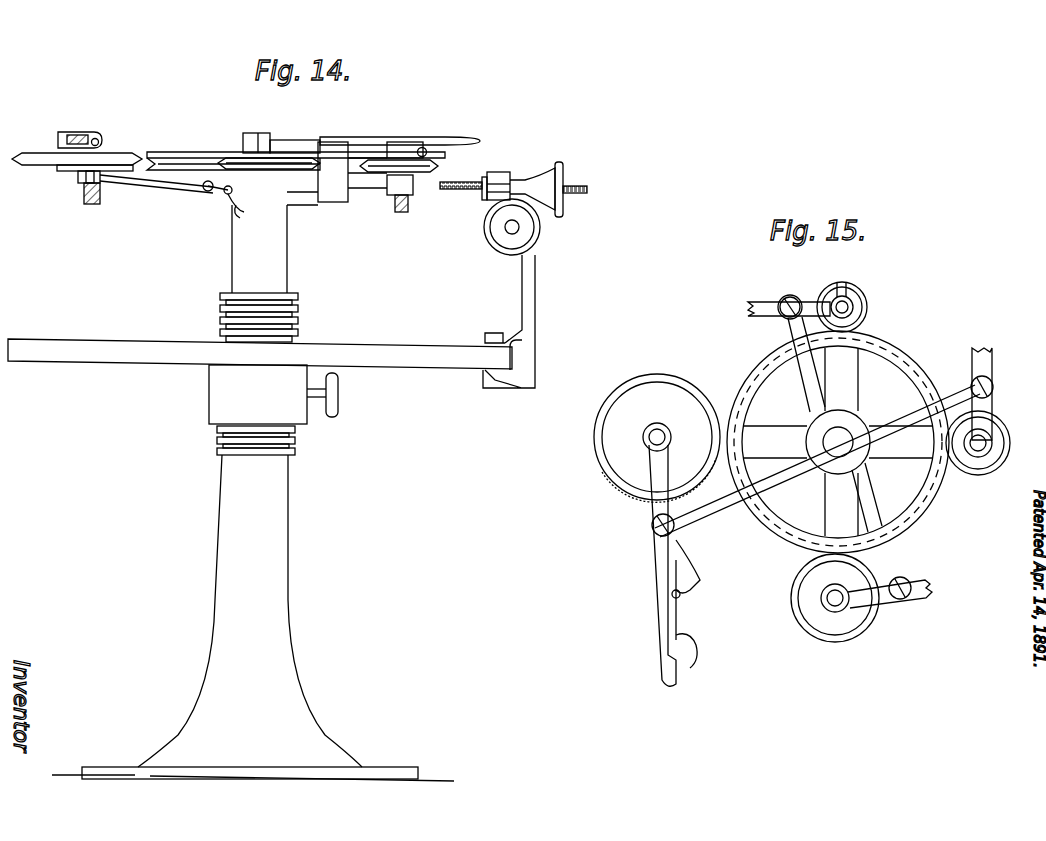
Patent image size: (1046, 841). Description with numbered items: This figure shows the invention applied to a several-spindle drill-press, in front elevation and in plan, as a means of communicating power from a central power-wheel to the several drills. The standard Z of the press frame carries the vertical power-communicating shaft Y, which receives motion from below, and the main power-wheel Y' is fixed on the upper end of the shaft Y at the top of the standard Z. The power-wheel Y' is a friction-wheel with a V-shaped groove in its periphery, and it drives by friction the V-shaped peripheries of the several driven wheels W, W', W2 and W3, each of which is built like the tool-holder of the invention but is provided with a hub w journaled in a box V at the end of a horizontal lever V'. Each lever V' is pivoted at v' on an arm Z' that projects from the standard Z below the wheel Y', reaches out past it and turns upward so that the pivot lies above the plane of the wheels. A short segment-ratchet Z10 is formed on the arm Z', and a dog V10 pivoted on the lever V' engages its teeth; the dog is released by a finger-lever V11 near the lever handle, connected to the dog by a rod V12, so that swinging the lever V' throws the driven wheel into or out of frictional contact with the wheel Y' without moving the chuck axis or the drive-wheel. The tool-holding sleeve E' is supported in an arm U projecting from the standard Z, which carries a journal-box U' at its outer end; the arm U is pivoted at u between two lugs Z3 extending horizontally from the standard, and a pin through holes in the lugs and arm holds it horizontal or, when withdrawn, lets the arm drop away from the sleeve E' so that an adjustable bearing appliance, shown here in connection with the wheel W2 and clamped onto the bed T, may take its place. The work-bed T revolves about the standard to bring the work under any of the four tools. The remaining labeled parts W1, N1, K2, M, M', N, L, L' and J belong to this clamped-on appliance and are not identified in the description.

In FIG. 14, the work-bed T is at (408, 352).
In FIG. 14, the standard Z is at (253, 618).
In FIG. 14, the driven wheel W is at (77, 143).
In FIG. 15, the driven wheel W is at (657, 438).
In FIG. 14, the box V is at (250, 129).
In FIG. 15, the box V is at (779, 450).
In FIG. 14, the horizontal lever V' is at (233, 120).
In FIG. 15, the horizontal lever V' is at (828, 436).
In FIG. 14, the journal-box U' is at (72, 183).
In FIG. 14, the tool-holding sleeve E' is at (247, 206).
In FIG. 14, the main power-wheel Y' is at (313, 145).
In FIG. 15, the main power-wheel Y' is at (917, 338).
In FIG. 14, the arm U is at (156, 192).
In FIG. 14, the lugs Z3 is at (206, 190).
In FIG. 14, the bar W1 is at (240, 162).
In FIG. 14, the pivot u is at (240, 215).
In FIG. 14, the arm Z' is at (337, 184).
In FIG. 15, the arm Z' is at (817, 463).
In FIG. 14, the block N1 is at (386, 182).
In FIG. 14, the driven wheel W2 is at (440, 166).
In FIG. 15, the driven wheel W2 is at (1004, 470).
In FIG. 14, the bracket K2 is at (500, 178).
In FIG. 14, the bell M is at (536, 176).
In FIG. 14, the shaft M' is at (527, 171).
In FIG. 14, the shaft N is at (582, 192).
In FIG. 14, the pulley L is at (524, 227).
In FIG. 14, the pulley hub L' is at (484, 259).
In FIG. 14, the bracket J is at (538, 292).
In FIG. 15, the power-communicating shaft Y is at (843, 442).
In FIG. 15, the hub w is at (649, 437).
In FIG. 15, the segment-ratchet Z10 is at (655, 560).
In FIG. 15, the pivot v' is at (820, 448).
In FIG. 15, the driven wheel W3 is at (846, 297).
In FIG. 15, the driven wheel W' is at (836, 604).
In FIG. 15, the dog V10 is at (700, 584).
In FIG. 15, the rod V12 is at (690, 610).
In FIG. 15, the finger-lever V11 is at (700, 652).